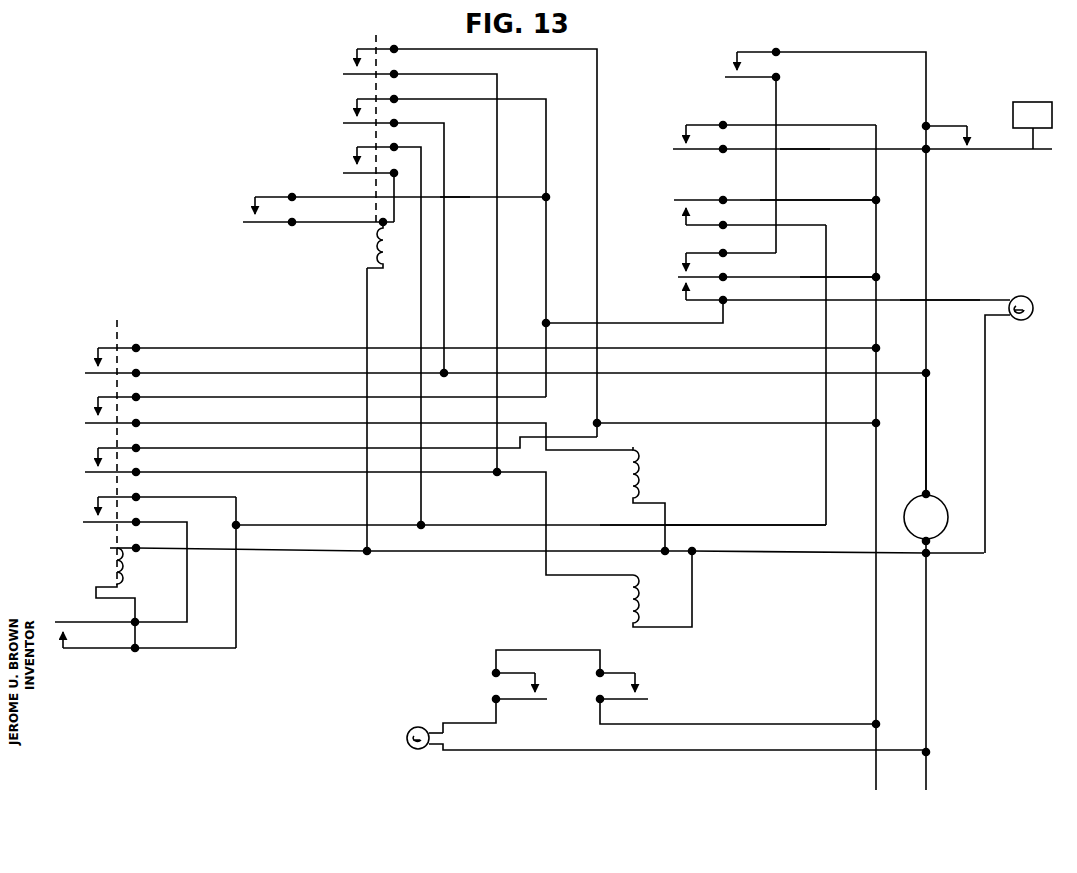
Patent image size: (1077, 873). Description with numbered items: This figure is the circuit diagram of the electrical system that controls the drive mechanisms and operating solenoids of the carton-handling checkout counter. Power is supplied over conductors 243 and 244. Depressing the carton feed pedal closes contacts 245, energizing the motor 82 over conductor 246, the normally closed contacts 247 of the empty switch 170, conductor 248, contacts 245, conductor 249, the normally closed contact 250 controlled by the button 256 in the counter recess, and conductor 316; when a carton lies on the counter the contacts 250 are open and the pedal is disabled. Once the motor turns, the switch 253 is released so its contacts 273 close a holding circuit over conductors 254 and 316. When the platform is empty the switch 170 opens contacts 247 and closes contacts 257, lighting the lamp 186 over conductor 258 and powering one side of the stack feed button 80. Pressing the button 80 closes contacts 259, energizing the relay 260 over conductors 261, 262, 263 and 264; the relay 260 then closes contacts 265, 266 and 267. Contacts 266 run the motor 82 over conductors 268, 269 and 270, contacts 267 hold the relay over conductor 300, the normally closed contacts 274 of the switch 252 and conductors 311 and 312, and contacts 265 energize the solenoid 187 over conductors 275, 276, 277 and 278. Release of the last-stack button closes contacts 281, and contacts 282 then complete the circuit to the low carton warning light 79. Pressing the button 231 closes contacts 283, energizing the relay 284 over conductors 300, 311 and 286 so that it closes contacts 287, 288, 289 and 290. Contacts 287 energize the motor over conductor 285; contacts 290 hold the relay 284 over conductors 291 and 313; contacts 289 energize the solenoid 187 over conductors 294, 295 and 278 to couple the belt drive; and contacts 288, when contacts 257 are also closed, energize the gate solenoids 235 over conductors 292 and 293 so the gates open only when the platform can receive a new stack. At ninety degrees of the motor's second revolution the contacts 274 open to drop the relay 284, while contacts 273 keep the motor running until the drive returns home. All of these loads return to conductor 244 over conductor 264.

The contacts 265 is at (357, 49).
The contacts 266 is at (357, 99).
The contacts 267 is at (357, 147).
The conductor 268 is at (530, 99).
The conductor 276 is at (597, 97).
The conductor 277 is at (497, 262).
The conductor 261 is at (546, 285).
The conductor 269 is at (444, 290).
The conductor 312 is at (422, 506).
The contacts 259 is at (255, 197).
The conductor 262 is at (455, 197).
The stack feed button 80 is at (245, 222).
The relay 260 is at (370, 248).
The conductor 263 is at (367, 335).
The contacts 245 is at (752, 52).
The conductor 249 is at (866, 52).
The conductor 248 is at (778, 110).
The contacts 273 is at (686, 126).
The switch 253 is at (673, 149).
The conductor 254 is at (795, 150).
The normally closed contact 250 is at (987, 118).
The button 256 is at (1025, 102).
The conductor 243 is at (876, 632).
The switch 252 is at (674, 200).
The conductor 300 is at (793, 200).
The normally closed contacts 274 is at (686, 224).
The conductor 311 is at (826, 245).
The normally closed contacts 247 is at (686, 253).
The empty switch 170 is at (678, 277).
The conductor 246 is at (836, 277).
The contacts 257 is at (686, 300).
The conductor 258 is at (940, 303).
The lamp 186 is at (1015, 298).
The contacts 287 is at (98, 348).
The conductor 285 is at (808, 348).
The conductor 270 is at (708, 373).
The contacts 288 is at (98, 397).
The conductors 292 is at (438, 397).
The conductors 293 is at (438, 423).
The contacts 289 is at (98, 447).
The conductor 294 is at (443, 448).
The conductor 295 is at (438, 472).
The conductor 275 is at (798, 423).
The contacts 290 is at (98, 497).
The conductor 291 is at (182, 497).
The conductor 286 is at (236, 614).
The conductor 313 is at (187, 602).
The relay 284 is at (110, 562).
The button 231 is at (85, 622).
The contacts 283 is at (63, 652).
The conductor 264 is at (443, 552).
The gate solenoids 235 is at (631, 480).
The conductor 278 is at (613, 525).
The solenoid 187 is at (628, 600).
The motor 82 is at (934, 500).
The conductor 316 is at (928, 430).
The conductor 244 is at (928, 640).
The contacts 281 is at (520, 673).
The contacts 282 is at (638, 673).
The low carton warning light 79 is at (420, 752).